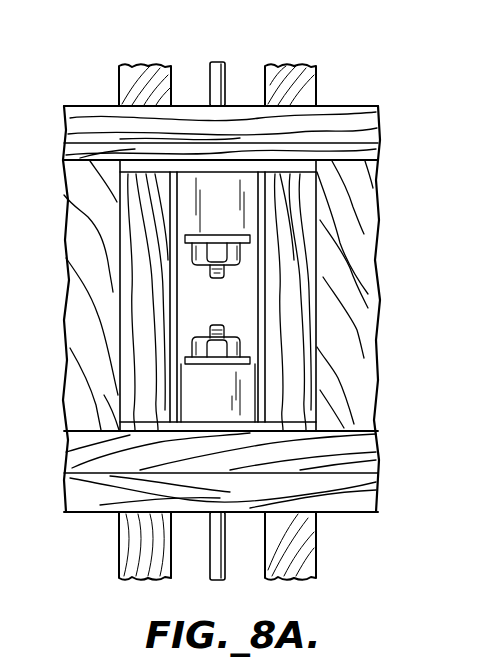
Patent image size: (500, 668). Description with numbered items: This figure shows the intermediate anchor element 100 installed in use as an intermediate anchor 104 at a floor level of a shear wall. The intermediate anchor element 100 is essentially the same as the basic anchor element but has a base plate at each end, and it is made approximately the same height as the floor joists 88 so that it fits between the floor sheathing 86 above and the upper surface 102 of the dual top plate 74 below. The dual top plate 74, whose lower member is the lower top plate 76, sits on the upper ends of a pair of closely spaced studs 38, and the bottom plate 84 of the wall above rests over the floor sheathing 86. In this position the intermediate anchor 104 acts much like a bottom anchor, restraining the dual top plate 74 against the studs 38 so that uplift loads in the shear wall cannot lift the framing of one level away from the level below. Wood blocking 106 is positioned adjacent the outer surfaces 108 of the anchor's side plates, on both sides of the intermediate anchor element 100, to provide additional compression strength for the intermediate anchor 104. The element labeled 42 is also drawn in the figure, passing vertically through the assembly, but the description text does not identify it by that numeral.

The studs 38 is at (128, 82).
The rod 42 is at (222, 68).
The dual top plate 74 is at (385, 431).
The lower top plate 76 is at (337, 508).
The bottom plate 84 is at (380, 128).
The floor sheathing 86 is at (380, 156).
The floor joists 88 is at (357, 352).
The intermediate anchor element 100 is at (276, 231).
The upper surface of dual top plate 102 is at (353, 428).
The intermediate anchor 104 is at (378, 62).
The wood blocking 106 is at (138, 354).
The outer surfaces of side plates 108 is at (170, 287).